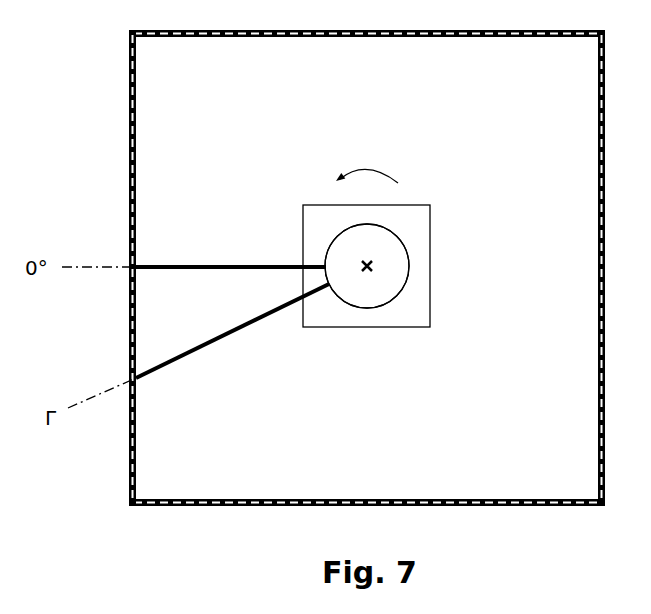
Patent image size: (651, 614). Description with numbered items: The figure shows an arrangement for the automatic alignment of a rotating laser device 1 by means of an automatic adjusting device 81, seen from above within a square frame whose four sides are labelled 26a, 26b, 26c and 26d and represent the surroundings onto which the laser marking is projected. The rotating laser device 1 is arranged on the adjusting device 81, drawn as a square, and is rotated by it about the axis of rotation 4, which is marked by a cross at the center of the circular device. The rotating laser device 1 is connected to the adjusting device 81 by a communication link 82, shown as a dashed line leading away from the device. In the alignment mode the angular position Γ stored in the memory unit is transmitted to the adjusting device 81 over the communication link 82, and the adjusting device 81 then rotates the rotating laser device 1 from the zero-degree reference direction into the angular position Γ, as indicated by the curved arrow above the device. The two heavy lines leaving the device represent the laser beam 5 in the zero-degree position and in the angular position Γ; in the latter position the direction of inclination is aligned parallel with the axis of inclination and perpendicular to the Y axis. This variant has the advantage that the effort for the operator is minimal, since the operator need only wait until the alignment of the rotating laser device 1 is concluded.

The rotating laser device 1 is at (395, 233).
The axis of rotation 4 is at (367, 272).
The laser beam 5 is at (261, 265).
The adjusting device 81 is at (430, 313).
The communication link 82 is at (409, 267).
The right wall 26a is at (593, 386).
The top wall 26b is at (353, 42).
The left wall 26c is at (142, 123).
The bottom wall 26d is at (362, 494).